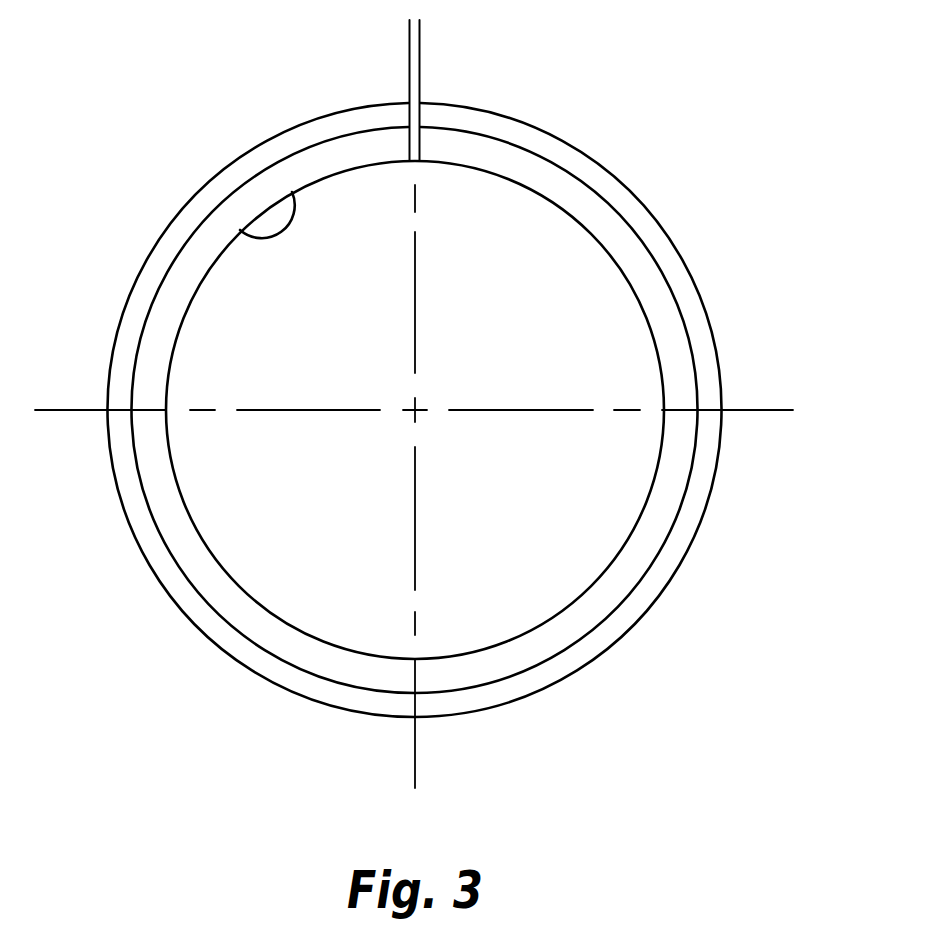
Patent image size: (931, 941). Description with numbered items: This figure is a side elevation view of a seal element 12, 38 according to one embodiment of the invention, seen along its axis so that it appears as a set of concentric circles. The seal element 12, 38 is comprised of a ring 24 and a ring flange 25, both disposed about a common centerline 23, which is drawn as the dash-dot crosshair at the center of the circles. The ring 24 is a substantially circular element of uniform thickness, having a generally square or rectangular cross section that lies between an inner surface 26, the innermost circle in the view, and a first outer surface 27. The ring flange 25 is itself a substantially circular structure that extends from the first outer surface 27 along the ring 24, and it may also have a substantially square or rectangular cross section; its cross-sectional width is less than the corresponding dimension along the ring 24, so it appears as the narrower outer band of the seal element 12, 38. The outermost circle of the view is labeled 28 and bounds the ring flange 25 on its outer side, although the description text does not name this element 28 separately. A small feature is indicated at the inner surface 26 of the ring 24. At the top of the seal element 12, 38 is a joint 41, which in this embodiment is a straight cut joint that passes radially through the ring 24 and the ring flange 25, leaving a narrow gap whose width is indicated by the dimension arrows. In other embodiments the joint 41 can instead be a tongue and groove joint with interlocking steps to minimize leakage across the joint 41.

The seal element 12 is at (441, 404).
The seal element 38 is at (416, 404).
The common centerline 23 is at (415, 410).
The ring 24 is at (253, 626).
The ring flange 25 is at (140, 527).
The inner surface 26 is at (240, 230).
The first outer surface 27 is at (588, 180).
The outer surface 28 is at (422, 410).
The joint 41 is at (355, 32).